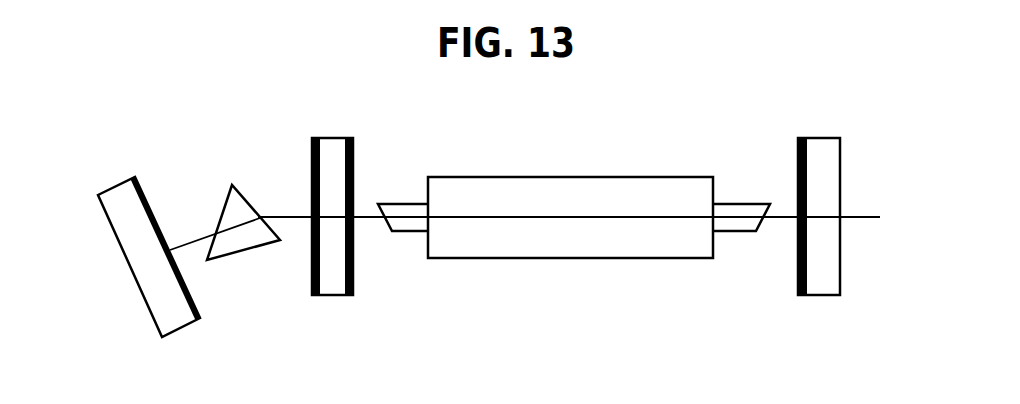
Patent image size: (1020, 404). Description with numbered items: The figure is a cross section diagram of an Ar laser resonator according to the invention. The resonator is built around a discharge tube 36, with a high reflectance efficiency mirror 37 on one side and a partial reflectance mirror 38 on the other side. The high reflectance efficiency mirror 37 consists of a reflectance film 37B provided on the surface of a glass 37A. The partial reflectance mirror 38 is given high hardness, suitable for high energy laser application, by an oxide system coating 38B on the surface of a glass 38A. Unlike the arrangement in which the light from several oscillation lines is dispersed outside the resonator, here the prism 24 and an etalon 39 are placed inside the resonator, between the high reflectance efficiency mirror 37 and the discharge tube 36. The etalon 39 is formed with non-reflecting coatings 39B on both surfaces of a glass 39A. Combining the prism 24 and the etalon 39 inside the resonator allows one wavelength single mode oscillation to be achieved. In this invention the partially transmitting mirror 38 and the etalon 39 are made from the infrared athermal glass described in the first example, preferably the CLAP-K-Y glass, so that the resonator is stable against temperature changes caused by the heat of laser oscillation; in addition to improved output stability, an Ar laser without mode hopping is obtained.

The prism 24 is at (233, 192).
The discharge tube 36 is at (612, 178).
The high reflectance efficiency mirror 37 is at (139, 237).
The glass 37A is at (133, 253).
The reflectance film 37B is at (192, 293).
The partial reflectance mirror 38 is at (806, 197).
The glass 38A is at (832, 257).
The oxide system coating 38B is at (795, 275).
The etalon 39 is at (366, 210).
The glass 39A is at (330, 287).
The non-reflecting coatings 39B is at (310, 275).